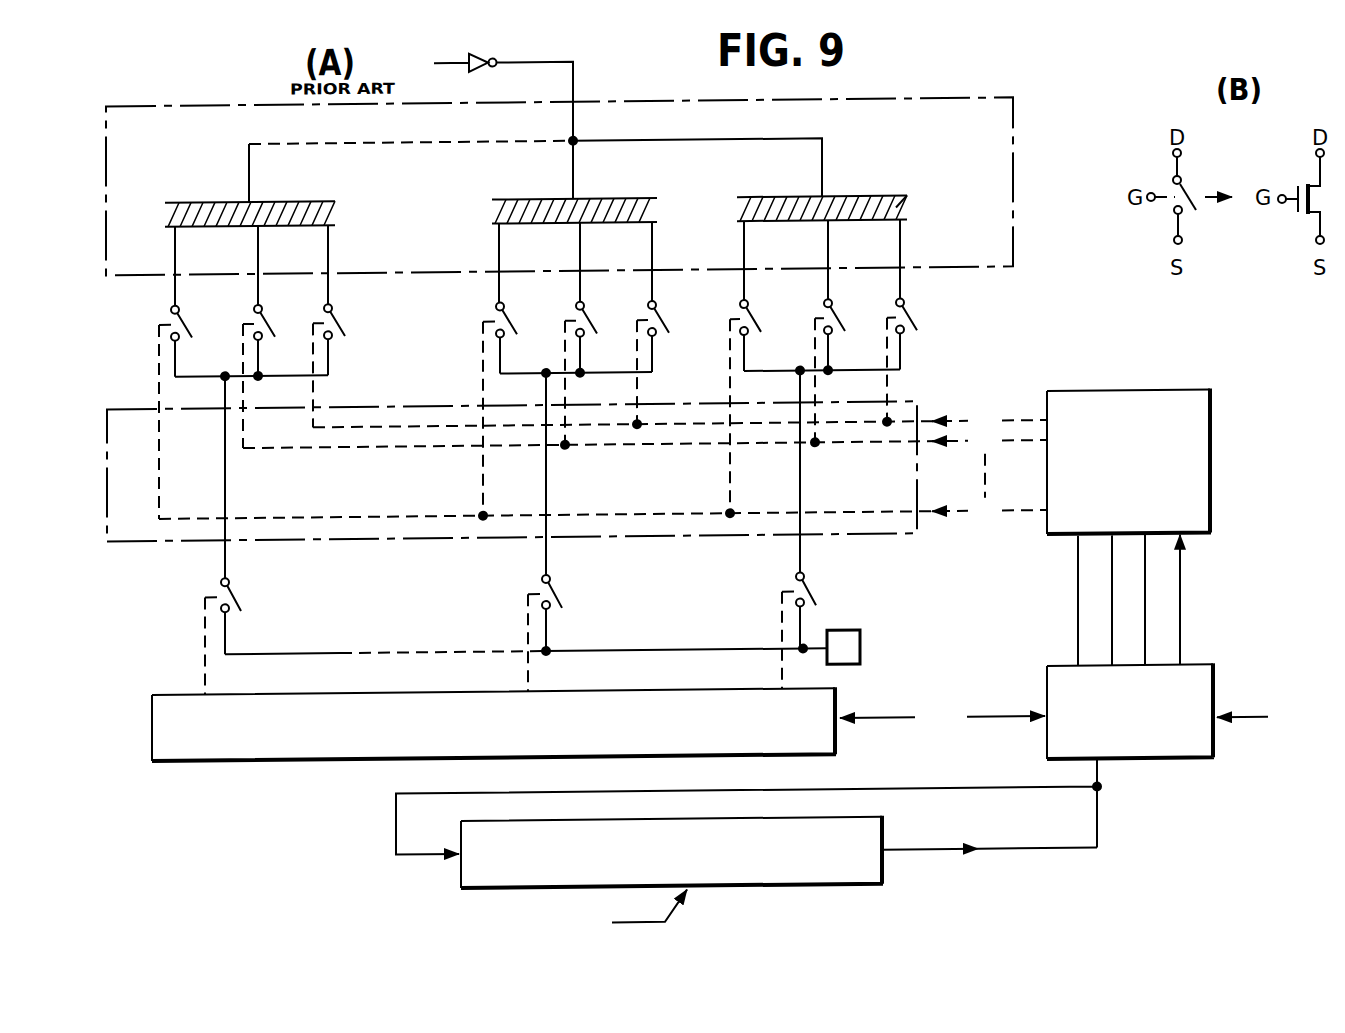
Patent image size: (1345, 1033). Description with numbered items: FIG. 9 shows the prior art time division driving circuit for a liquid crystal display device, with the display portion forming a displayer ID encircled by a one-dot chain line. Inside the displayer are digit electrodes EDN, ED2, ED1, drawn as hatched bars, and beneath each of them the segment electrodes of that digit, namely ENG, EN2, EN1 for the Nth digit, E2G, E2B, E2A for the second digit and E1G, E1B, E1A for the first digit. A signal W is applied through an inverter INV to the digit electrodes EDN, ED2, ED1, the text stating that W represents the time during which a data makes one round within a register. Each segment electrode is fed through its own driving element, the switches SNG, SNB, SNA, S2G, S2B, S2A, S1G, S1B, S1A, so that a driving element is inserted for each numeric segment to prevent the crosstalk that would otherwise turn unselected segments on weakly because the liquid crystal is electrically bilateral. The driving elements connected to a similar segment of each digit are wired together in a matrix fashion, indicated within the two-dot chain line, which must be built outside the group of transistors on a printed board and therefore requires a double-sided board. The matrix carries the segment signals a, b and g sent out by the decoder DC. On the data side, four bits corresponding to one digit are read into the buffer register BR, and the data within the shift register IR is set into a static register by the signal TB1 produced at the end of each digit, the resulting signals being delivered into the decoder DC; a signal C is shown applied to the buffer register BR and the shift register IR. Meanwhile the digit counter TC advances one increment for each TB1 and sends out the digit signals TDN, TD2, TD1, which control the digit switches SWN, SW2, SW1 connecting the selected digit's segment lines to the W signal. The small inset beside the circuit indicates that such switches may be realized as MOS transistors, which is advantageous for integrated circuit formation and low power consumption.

The inverter INV is at (494, 116).
The digit electrode N EDN is at (282, 203).
The digit electrode 2 ED2 is at (628, 203).
The digit electrode 1 ED1 is at (848, 203).
The display element ID is at (905, 212).
The segment electrode g of digit N ENG is at (178, 228).
The segment electrode b of digit N EN2 is at (261, 228).
The segment electrode a of digit N EN1 is at (331, 228).
The segment electrode g of digit 2 E2G is at (502, 228).
The segment electrode b of digit 2 E2B is at (583, 228).
The segment electrode a of digit 2 E2A is at (655, 228).
The segment electrode E1G is at (747, 228).
The segment electrode E1B is at (831, 228).
The segment electrode E1A is at (903, 228).
The segment switch g of digit N SNG is at (180, 321).
The segment switch b of digit N SNB is at (262, 321).
The segment switch a of digit N SNA is at (334, 320).
The segment switch g of digit 2 S2G is at (507, 321).
The segment switch b of digit 2 S2B is at (588, 318).
The segment switch a of digit 2 S2A is at (660, 318).
The segment switch g of digit 1 S1G is at (752, 322).
The segment switch b of digit 1 S1B is at (855, 368).
The segment switch a of digit 1 S1A is at (908, 320).
The segment signal a is at (680, 424).
The segment signal b is at (645, 444).
The segment signal g is at (603, 515).
The digit switch N SWN is at (238, 600).
The digit switch 2 SW2 is at (562, 602).
The digit switch 1 SW1 is at (812, 602).
The digit signal TDN is at (191, 635).
The digit signal TD2 is at (514, 634).
The digit signal TD1 is at (772, 629).
The round time W is at (843, 648).
The digit counter TC is at (274, 763).
The digit end signal TB1 is at (942, 718).
The decoder DC is at (1133, 400).
The buffer register BR is at (1215, 683).
The clock signal C is at (1252, 717).
The shift register IR is at (885, 871).